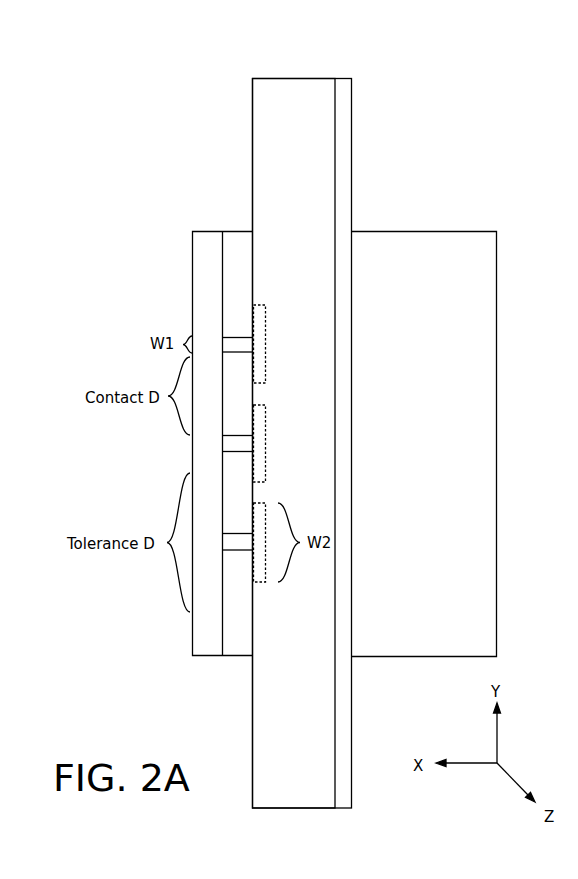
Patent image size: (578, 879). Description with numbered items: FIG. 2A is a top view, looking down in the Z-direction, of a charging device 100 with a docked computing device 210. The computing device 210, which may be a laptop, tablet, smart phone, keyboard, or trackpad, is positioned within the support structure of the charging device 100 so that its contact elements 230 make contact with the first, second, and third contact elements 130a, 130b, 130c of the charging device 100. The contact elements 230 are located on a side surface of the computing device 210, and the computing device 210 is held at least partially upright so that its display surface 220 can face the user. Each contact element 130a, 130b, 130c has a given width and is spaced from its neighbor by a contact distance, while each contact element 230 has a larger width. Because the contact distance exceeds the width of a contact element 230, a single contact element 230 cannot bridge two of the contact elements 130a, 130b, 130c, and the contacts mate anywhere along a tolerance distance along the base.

The charging device 100 is at (450, 210).
The computing device 210 is at (299, 67).
The display surface 220 is at (283, 184).
The first contact element 130a is at (243, 345).
The second contact element 130b is at (238, 445).
The third contact element 130c is at (238, 543).
The contact elements 230 is at (260, 329).